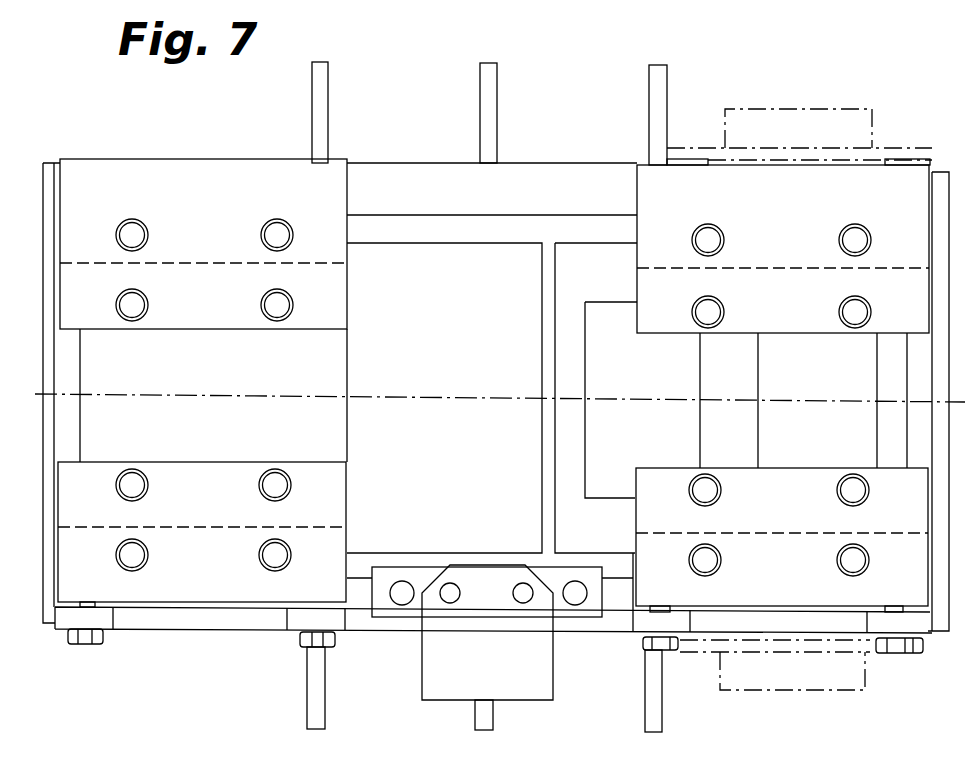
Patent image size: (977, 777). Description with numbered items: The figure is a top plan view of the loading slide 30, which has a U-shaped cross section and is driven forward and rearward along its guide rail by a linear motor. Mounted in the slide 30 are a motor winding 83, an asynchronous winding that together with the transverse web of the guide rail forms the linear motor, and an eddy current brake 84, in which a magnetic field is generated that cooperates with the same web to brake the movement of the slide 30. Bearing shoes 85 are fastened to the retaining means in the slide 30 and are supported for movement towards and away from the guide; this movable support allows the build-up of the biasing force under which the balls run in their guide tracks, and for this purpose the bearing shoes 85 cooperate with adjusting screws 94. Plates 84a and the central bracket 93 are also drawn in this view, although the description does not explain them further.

The loading slide 30 is at (562, 160).
The motor winding 83 is at (657, 382).
The eddy current brake 84 is at (463, 346).
The upper clamping plate 84a is at (243, 330).
The bearing shoes 85 is at (232, 462).
The mounting bracket 93 is at (542, 700).
The adjusting screws 94 is at (88, 638).